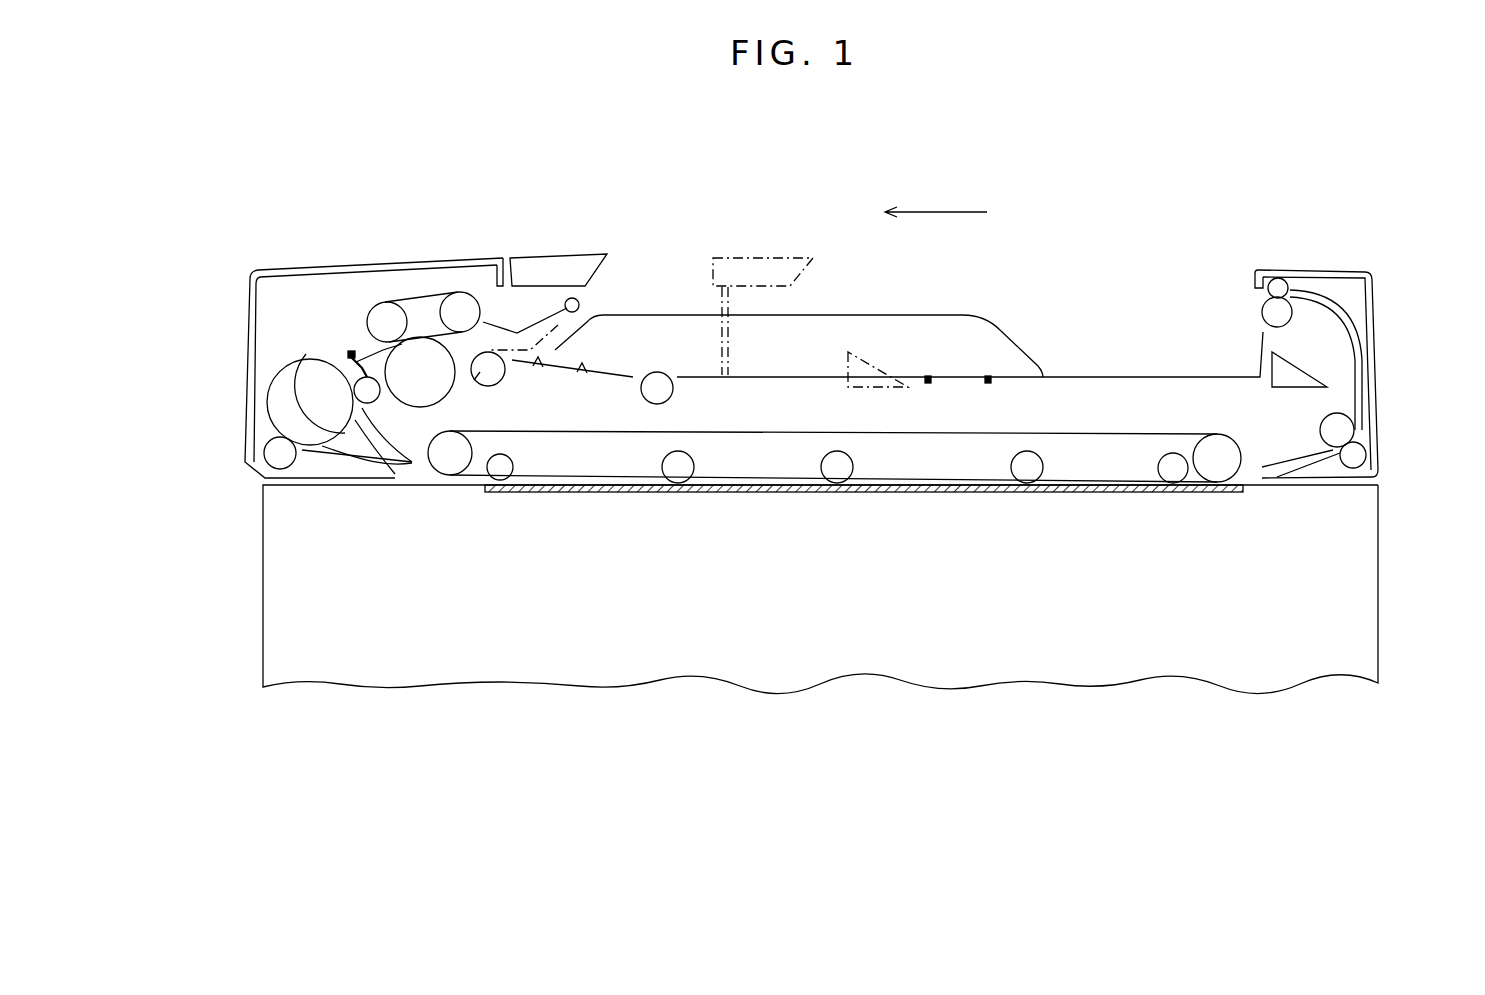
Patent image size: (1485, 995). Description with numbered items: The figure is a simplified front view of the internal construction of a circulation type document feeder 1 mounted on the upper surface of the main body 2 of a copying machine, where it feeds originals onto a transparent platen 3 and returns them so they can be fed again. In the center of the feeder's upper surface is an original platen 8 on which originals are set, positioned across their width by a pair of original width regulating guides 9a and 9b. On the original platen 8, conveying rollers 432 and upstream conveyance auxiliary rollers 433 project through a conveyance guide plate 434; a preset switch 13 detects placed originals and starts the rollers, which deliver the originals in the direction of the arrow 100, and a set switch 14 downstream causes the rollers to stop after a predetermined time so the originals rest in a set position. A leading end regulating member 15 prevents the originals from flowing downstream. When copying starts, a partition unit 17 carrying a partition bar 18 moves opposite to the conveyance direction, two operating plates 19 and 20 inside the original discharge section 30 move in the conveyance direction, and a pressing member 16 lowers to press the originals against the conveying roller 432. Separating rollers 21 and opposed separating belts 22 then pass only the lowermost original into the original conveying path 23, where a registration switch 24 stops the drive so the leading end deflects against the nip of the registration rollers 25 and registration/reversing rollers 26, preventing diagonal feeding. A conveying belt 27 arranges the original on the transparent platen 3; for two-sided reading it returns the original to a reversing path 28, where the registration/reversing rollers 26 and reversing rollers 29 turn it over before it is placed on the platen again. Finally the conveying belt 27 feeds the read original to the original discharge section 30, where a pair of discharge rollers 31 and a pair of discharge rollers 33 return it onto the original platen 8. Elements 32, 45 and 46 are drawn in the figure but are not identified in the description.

The circulation type document feeder 1 is at (343, 249).
The main body 2 is at (1355, 560).
The transparent platen 3 is at (1122, 493).
The original platen 8 is at (1098, 377).
The original width regulating guide 9a is at (799, 313).
The original width regulating guide 9b is at (917, 313).
The preset switch 13 is at (581, 372).
The set switch 14 is at (533, 368).
The leading end regulating member 15 is at (492, 380).
The pressing member 16 is at (530, 328).
The partition unit 17 is at (537, 255).
The partition bar 18 is at (728, 352).
The operating plate 19 is at (1087, 397).
The operating plate 20 is at (892, 390).
The separating roller 21 is at (416, 400).
The separating belt 22 is at (421, 300).
The original conveying path 23 is at (373, 353).
The registration switch 24 is at (348, 352).
The registration roller 25 is at (369, 403).
The registration/reversing roller 26 is at (285, 392).
The conveying belt 27 is at (773, 428).
The reversing path 28 is at (268, 425).
The reversing roller 29 is at (283, 462).
The original discharge section 30 is at (1341, 266).
The discharge roller 31 is at (1353, 455).
The guide 32 is at (1363, 360).
The discharge roller 33 is at (1279, 313).
The sensor 45 is at (928, 376).
The sensor 46 is at (988, 376).
The arrow 100 is at (943, 212).
The conveying roller 432 is at (523, 432).
The conveyance auxiliary roller 433 is at (657, 387).
The conveyance guide plate 434 is at (612, 367).